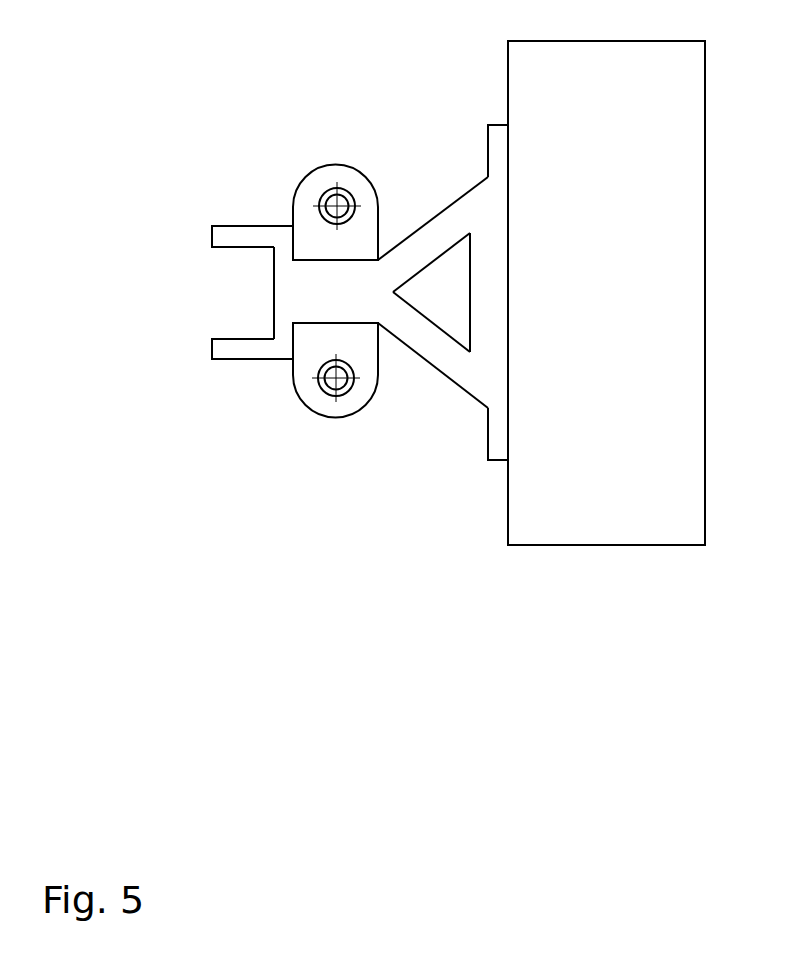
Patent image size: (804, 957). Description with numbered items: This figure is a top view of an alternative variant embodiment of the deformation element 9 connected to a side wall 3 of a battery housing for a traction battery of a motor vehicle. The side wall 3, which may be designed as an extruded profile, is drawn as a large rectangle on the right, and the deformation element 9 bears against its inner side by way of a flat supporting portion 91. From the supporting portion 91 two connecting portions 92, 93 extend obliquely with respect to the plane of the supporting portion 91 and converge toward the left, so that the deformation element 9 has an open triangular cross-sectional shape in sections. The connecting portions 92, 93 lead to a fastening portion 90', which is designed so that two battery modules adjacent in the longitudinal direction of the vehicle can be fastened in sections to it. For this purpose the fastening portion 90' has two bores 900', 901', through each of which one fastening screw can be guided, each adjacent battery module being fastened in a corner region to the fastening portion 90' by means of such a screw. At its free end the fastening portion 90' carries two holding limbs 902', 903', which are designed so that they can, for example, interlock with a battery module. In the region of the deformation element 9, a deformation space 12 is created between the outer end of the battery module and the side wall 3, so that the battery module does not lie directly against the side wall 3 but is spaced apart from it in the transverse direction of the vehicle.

The side wall 3 is at (672, 355).
The deformation element 9 is at (419, 152).
The deformation space 12 is at (448, 463).
The fastening portion 90' is at (330, 183).
The supporting portion 91 is at (499, 197).
The connecting portion 92 is at (430, 338).
The connecting portion 93 is at (458, 216).
The bore 900' is at (346, 409).
The bore 901' is at (348, 140).
The holding limb 902' is at (252, 381).
The holding limb 903' is at (252, 202).